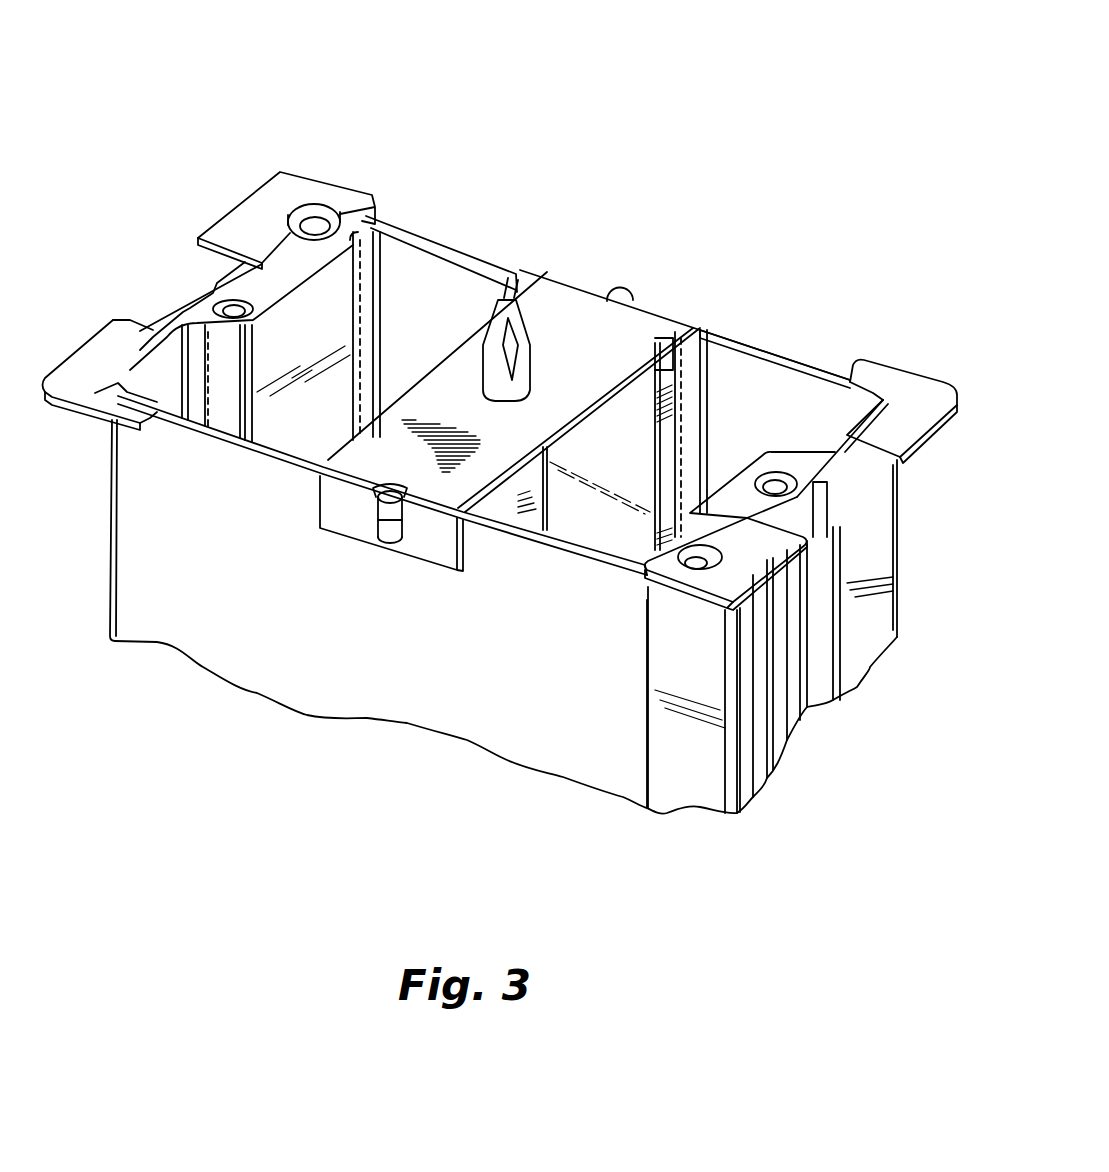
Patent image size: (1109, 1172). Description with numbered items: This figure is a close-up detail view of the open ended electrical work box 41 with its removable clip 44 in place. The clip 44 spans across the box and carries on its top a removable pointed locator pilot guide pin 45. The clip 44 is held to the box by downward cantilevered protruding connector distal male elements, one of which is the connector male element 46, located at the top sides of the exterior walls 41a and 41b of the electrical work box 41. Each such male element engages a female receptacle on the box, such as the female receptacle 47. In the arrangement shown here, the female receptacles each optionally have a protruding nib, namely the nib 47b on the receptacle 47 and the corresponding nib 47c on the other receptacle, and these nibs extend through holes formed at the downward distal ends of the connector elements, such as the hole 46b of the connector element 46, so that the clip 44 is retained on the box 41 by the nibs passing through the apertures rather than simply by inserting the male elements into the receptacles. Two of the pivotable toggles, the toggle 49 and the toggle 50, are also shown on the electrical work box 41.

The electrical work box 41 is at (500, 424).
The exterior wall 41a is at (268, 447).
The exterior wall 41b is at (441, 245).
The removable clip 44 is at (598, 365).
The locator pilot guide pin 45 is at (516, 322).
The connector male element 46 is at (330, 517).
The hole 46b is at (400, 485).
The female receptacle 47 is at (413, 522).
The protruding nib 47b is at (380, 523).
The protruding nib 47c is at (624, 290).
The pivotable toggle 49 is at (287, 185).
The pivotable toggle 50 is at (742, 552).